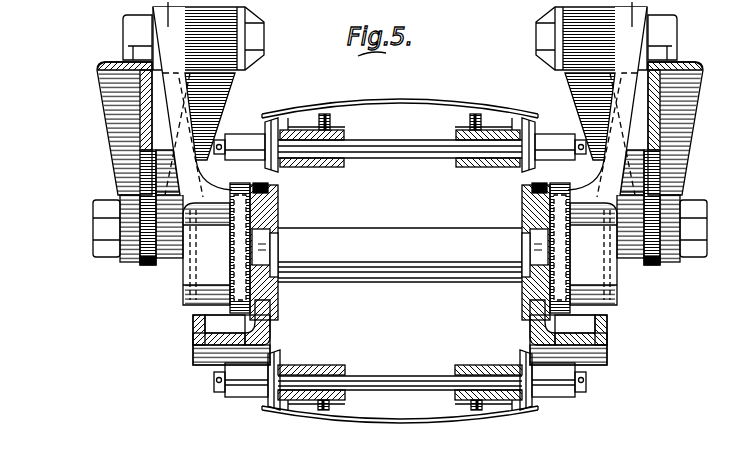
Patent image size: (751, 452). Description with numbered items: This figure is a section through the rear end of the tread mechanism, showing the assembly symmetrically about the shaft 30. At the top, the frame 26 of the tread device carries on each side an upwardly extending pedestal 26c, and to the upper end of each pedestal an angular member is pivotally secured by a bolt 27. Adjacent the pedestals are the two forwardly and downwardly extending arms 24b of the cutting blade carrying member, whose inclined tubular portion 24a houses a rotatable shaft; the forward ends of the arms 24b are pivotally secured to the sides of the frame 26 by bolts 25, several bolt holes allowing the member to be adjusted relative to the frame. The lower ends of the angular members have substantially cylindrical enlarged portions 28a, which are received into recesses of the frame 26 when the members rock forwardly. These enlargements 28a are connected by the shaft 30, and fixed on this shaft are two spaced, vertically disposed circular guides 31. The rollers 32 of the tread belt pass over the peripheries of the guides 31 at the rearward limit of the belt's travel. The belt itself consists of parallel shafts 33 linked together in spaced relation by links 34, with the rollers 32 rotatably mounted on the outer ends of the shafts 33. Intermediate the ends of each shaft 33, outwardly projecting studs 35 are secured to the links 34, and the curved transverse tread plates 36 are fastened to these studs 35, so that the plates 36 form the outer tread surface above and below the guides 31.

The inclined tubular portion 24a is at (133, 52).
The arms 24b is at (100, 68).
The bolts 25 is at (95, 238).
The frame 26 is at (193, 336).
The pedestal 26c is at (218, 105).
The bolt 27 is at (124, 30).
The enlarged portions 28a is at (183, 265).
The shaft 30 is at (405, 234).
The circular guides 31 is at (278, 216).
The rollers 32 is at (237, 138).
The shafts 33 is at (405, 157).
The links 34 is at (316, 167).
The studs 35 is at (331, 119).
The tread plates 36 is at (414, 99).